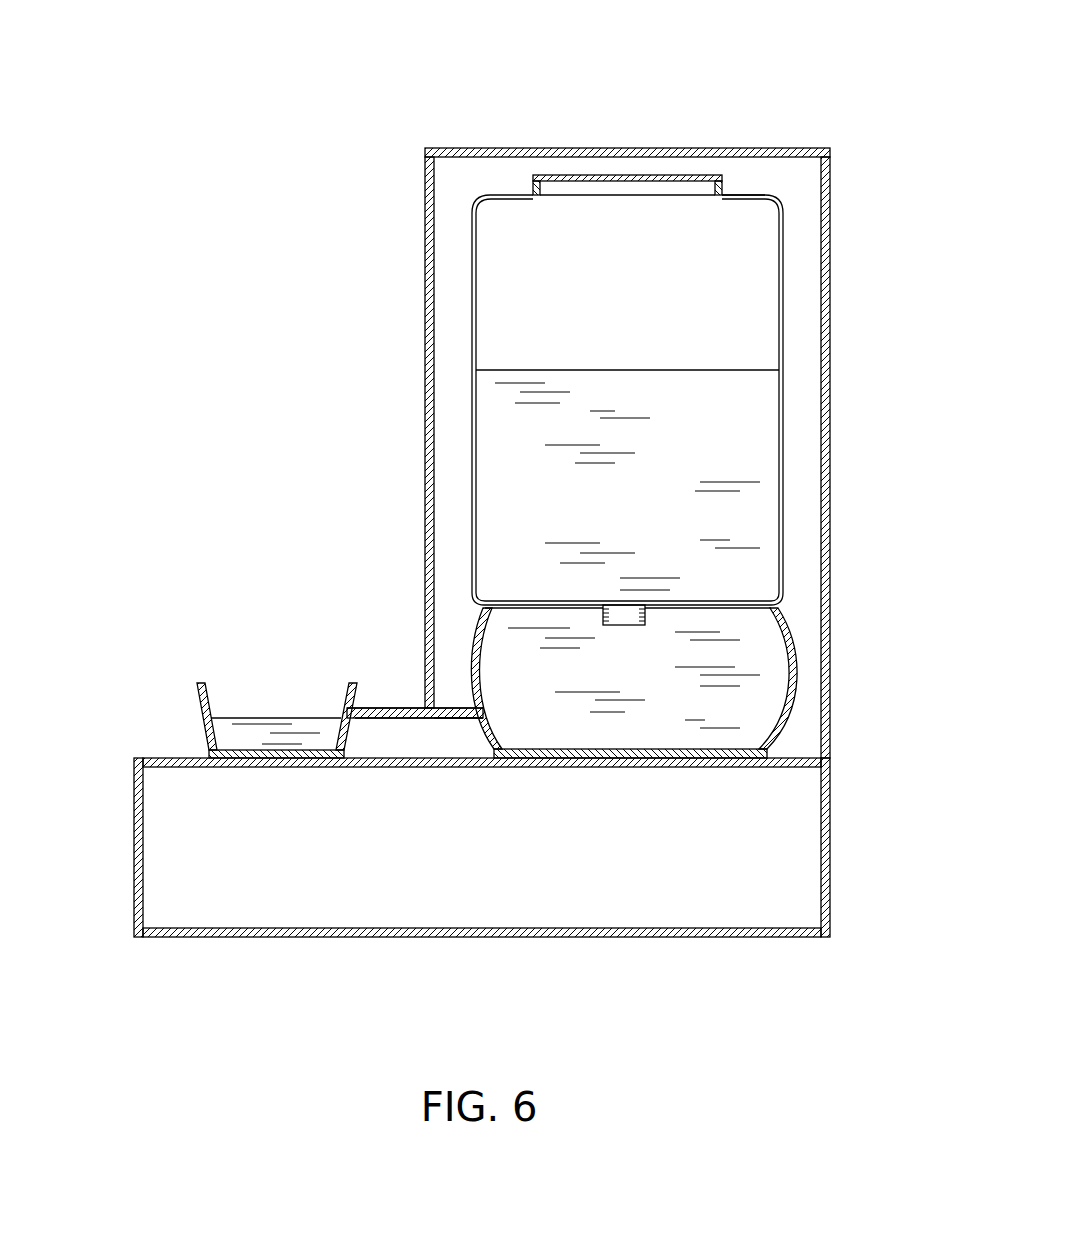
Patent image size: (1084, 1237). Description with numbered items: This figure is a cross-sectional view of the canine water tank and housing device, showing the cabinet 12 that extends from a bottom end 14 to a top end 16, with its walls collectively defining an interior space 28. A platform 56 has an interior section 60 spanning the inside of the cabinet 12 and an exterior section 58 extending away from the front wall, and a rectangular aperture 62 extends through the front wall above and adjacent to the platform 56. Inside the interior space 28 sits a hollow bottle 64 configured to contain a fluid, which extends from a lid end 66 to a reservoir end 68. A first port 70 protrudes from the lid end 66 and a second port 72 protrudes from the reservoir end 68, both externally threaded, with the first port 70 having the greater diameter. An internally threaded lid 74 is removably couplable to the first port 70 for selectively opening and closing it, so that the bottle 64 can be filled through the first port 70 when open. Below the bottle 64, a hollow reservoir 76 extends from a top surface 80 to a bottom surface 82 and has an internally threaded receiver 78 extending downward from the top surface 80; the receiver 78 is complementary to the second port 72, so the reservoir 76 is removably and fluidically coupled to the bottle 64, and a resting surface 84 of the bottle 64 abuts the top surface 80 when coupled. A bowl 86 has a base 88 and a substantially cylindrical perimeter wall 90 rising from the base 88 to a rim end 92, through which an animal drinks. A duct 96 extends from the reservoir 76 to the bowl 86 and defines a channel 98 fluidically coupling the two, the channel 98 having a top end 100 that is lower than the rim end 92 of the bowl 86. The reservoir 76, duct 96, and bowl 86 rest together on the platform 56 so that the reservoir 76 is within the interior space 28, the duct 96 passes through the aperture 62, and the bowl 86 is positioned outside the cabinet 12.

The cabinet 12 is at (500, 527).
The bottom end 14 is at (480, 900).
The top end 16 is at (473, 118).
The interior space 28 is at (627, 310).
The platform 56 is at (216, 937).
The exterior section 58 is at (134, 830).
The interior section 60 is at (830, 828).
The rectangular aperture 62 is at (395, 773).
The bottle 64 is at (622, 310).
The lid end 66 is at (745, 195).
The reservoir end 68 is at (738, 605).
The first port 70 is at (540, 188).
The second port 72 is at (628, 525).
The lid 74 is at (610, 175).
The reservoir 76 is at (715, 669).
The receiver 78 is at (648, 617).
The top surface 80 is at (555, 605).
The bottom surface 82 is at (615, 752).
The resting surface 84 is at (683, 605).
The bowl 86 is at (207, 754).
The base 88 is at (277, 767).
The perimeter wall 90 is at (207, 754).
The rim end 92 is at (205, 650).
The duct 96 is at (355, 680).
The channel 98 is at (432, 752).
The top end 100 is at (372, 720).